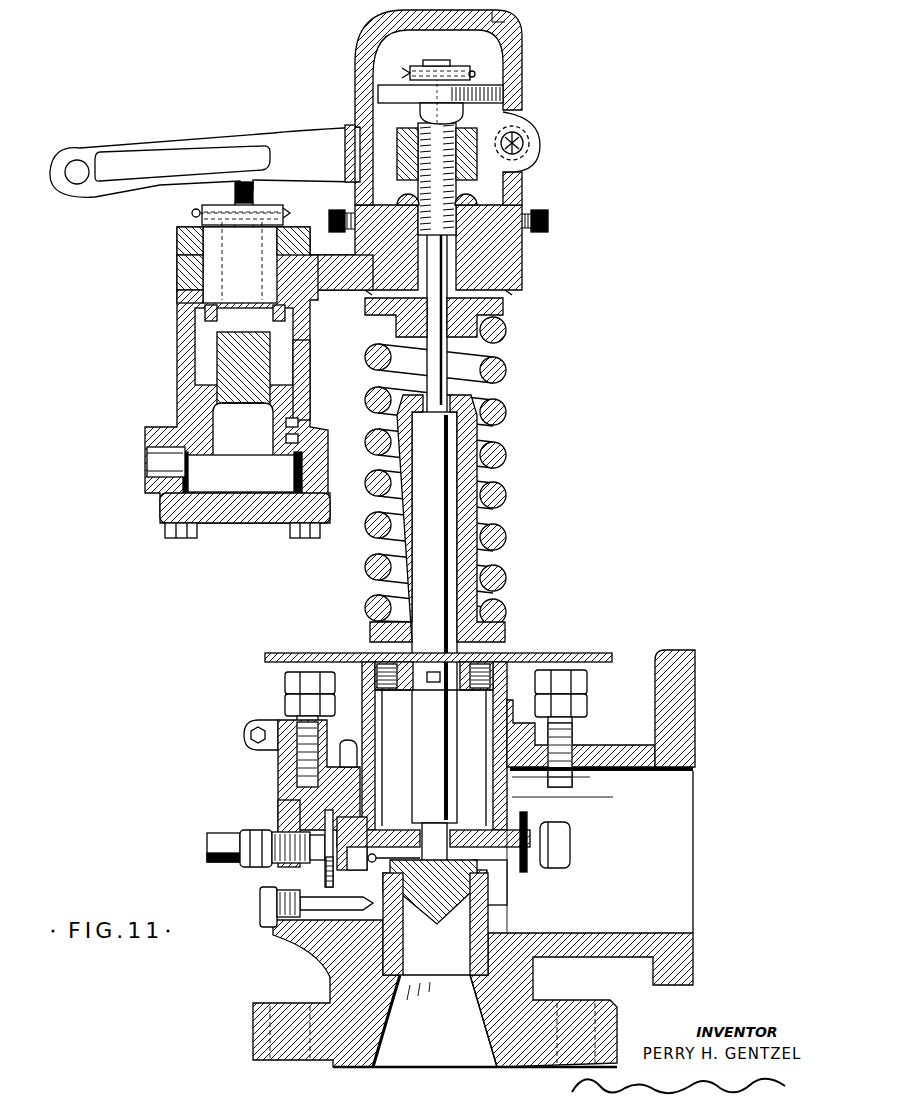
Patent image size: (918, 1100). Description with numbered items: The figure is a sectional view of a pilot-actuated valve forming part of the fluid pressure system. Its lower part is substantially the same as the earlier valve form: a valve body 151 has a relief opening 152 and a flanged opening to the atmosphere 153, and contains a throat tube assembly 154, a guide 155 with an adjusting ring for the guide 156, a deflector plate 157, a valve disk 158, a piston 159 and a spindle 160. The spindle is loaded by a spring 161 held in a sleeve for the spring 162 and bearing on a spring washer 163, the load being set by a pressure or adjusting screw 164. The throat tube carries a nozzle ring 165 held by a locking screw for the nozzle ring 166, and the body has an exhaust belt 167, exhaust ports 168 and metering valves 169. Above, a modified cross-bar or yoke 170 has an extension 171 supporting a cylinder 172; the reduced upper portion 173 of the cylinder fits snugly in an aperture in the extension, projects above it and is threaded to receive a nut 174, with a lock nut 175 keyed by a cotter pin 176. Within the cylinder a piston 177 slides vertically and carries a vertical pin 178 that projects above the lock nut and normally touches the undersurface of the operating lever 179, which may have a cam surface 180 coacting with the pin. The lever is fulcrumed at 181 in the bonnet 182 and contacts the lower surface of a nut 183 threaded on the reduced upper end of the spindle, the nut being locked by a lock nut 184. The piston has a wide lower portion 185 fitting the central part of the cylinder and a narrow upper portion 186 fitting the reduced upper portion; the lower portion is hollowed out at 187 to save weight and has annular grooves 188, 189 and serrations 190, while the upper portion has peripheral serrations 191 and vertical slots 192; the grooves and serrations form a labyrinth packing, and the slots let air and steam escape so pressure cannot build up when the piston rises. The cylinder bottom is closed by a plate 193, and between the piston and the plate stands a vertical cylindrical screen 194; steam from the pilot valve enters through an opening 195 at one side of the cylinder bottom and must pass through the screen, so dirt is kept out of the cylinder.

The valve body 151 is at (278, 775).
The relief opening 152 is at (487, 1032).
The flanged opening to the atmosphere 153 is at (695, 687).
The throat tube assembly 154 is at (403, 937).
The guide 155 is at (507, 684).
The adjusting ring for the guide 156 is at (283, 722).
The deflector plate 157 is at (587, 655).
The valve disk 158 is at (433, 910).
The piston 159 is at (380, 750).
The spindle 160 is at (434, 497).
The spring 161 is at (504, 458).
The sleeve for the spring 162 is at (474, 434).
The spring washer 163 is at (504, 311).
The pressure or adjusting screw 164 is at (463, 182).
The nozzle ring for the throat tube 165 is at (383, 883).
The locking screw for the nozzle ring 166 is at (326, 905).
The exhaust belt 167 is at (330, 873).
The exhaust ports 168 is at (501, 882).
The metering valves 169 is at (207, 845).
The cross-bar or yoke 170 is at (522, 256).
The extension 171 is at (318, 284).
The cylinder 172 is at (178, 383).
The reduced upper portion of the cylinder 173 is at (178, 266).
The nut 174 is at (178, 238).
The lock nut 175 is at (210, 205).
The cotter pin 176 is at (192, 213).
The piston 177 is at (230, 352).
The vertical pin 178 is at (253, 193).
The operating lever 179 is at (225, 130).
The cam surface 180 is at (240, 182).
The fulcrum 181 is at (524, 144).
The bonnet 182 is at (522, 56).
The nut 183 is at (420, 108).
The lock nut 184 is at (452, 67).
The wide lower portion of the piston 185 is at (243, 430).
The narrow upper portion of the piston 186 is at (262, 342).
The hollow 187 is at (264, 406).
The annular groove 188 is at (299, 418).
The annular groove 189 is at (299, 440).
The serrations 190 is at (311, 380).
The peripheral serrations 191 is at (213, 317).
The vertical slots 192 is at (186, 296).
The plate 193 is at (248, 517).
The vertical cylindrical screen 194 is at (190, 478).
The opening 195 is at (150, 462).